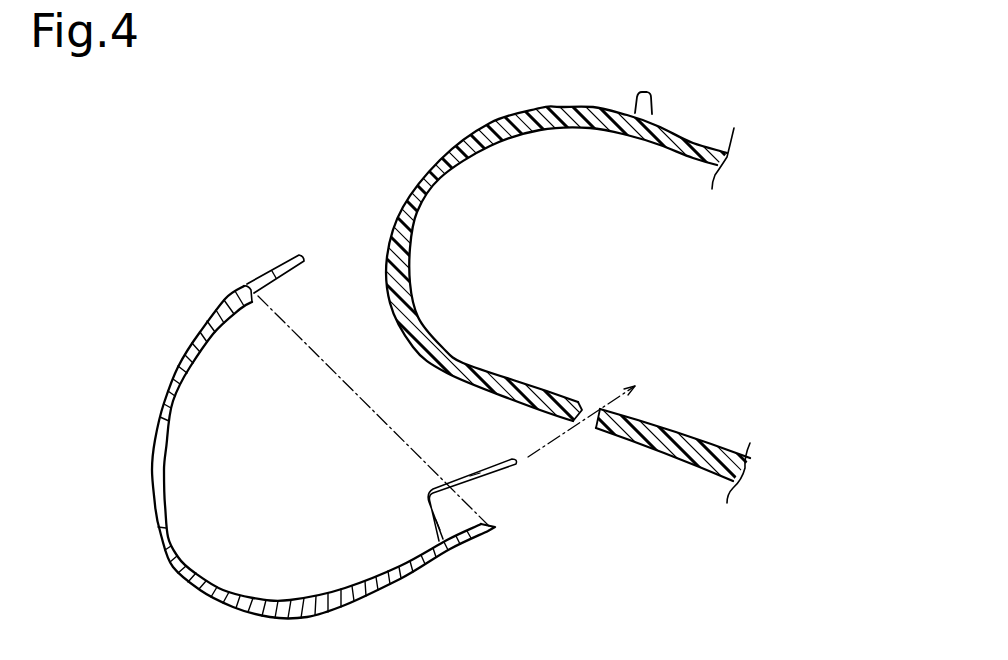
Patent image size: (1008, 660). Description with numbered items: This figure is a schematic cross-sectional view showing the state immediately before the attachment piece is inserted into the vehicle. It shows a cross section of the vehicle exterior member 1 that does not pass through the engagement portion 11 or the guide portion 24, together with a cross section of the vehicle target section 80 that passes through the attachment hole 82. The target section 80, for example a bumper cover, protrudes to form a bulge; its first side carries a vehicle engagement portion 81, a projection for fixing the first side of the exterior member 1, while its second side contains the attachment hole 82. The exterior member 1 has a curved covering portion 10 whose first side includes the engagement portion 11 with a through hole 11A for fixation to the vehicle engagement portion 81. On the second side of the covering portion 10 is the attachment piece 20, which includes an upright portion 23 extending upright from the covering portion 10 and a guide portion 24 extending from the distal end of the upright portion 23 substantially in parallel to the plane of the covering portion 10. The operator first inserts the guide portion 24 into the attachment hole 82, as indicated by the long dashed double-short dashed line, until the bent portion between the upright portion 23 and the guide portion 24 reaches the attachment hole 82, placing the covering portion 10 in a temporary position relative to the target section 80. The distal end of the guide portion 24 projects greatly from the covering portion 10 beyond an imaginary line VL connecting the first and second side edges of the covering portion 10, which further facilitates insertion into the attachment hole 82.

The vehicle exterior member 1 is at (100, 383).
The covering portion 10 is at (147, 525).
The engagement portion 11 is at (306, 250).
The through hole 11A is at (272, 262).
The attachment piece 20 is at (398, 505).
The upright portion 23 is at (432, 535).
The guide portion 24 is at (473, 470).
The imaginary line VL is at (322, 355).
The vehicle target section 80 is at (428, 300).
The vehicle engagement portion 81 is at (655, 96).
The attachment hole 82 is at (580, 414).